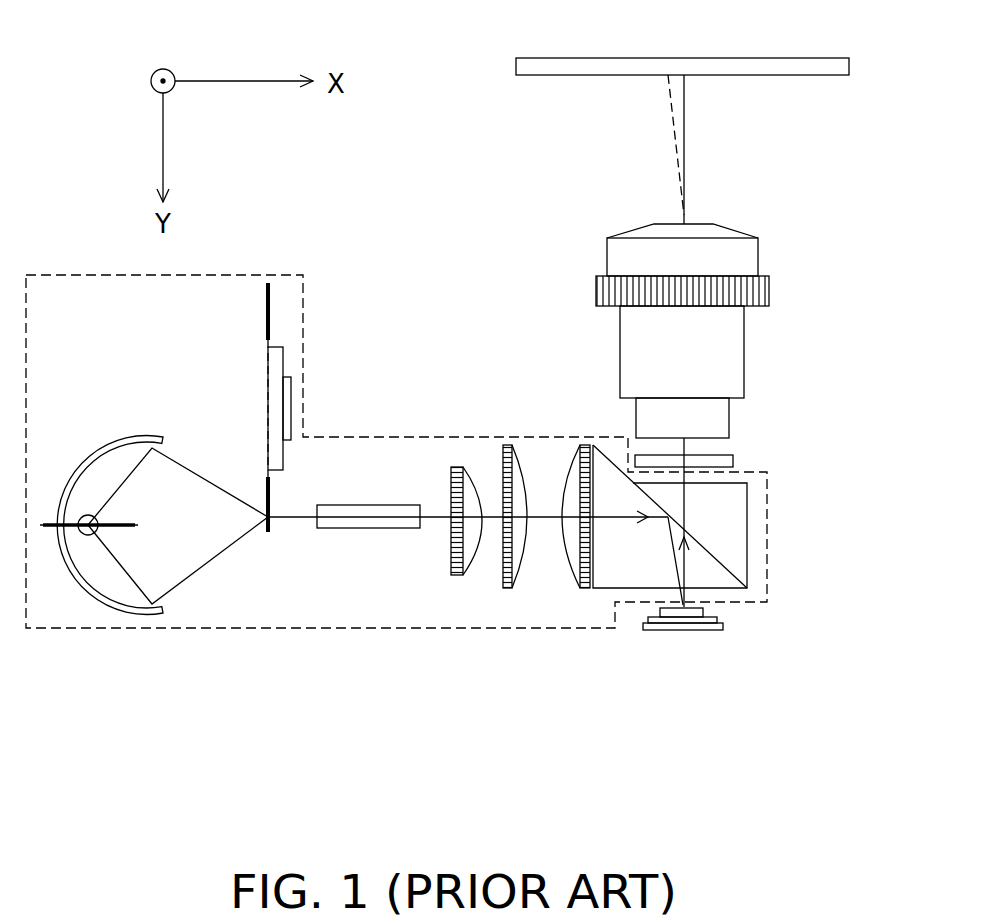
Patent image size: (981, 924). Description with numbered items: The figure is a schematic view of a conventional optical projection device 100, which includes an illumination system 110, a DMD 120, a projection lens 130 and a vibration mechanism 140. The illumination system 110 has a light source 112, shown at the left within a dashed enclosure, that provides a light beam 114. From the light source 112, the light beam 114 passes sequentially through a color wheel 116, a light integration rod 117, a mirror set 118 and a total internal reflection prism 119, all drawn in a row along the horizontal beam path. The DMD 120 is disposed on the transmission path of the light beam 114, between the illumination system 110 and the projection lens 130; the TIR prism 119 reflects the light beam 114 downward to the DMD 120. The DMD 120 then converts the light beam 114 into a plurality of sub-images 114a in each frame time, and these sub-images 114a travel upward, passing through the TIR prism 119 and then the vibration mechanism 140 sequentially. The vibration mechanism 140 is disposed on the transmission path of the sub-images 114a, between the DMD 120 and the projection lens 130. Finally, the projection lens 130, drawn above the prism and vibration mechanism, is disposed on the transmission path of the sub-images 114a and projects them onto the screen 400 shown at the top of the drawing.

The optical projection device 100 is at (483, 746).
The illumination system 110 is at (387, 437).
The light source 112 is at (88, 517).
The light beam 114 is at (290, 520).
The sub-images 114a is at (684, 501).
The color wheel 116 is at (271, 305).
The light integration rod 117 is at (366, 519).
The mirror set 118 is at (588, 430).
The total internal reflection prism 119 is at (738, 546).
The DMD 120 is at (702, 613).
The projection lens 130 is at (736, 332).
The vibration mechanism 140 is at (731, 461).
The screen 400 is at (758, 60).